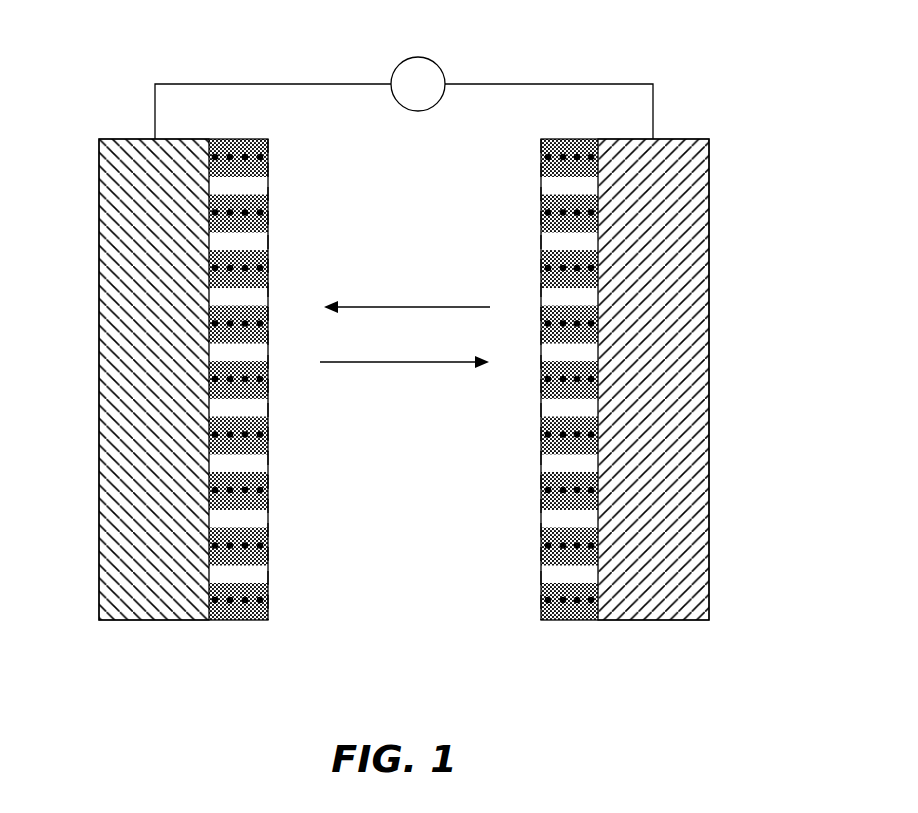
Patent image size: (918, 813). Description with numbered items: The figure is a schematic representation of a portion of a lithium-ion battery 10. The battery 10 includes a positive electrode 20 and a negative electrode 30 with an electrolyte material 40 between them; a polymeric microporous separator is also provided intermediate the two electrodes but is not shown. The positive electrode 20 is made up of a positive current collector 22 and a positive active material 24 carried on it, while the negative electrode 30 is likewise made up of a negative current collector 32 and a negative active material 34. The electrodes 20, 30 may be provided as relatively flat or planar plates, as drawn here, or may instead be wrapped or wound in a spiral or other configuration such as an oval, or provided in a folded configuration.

The lithium-ion battery 10 is at (619, 66).
The positive electrode 20 is at (622, 410).
The positive current collector 22 is at (680, 197).
The positive active material 24 is at (558, 157).
The negative electrode 30 is at (191, 406).
The negative current collector 32 is at (140, 190).
The negative active material 34 is at (252, 150).
The electrolyte material 40 is at (399, 474).